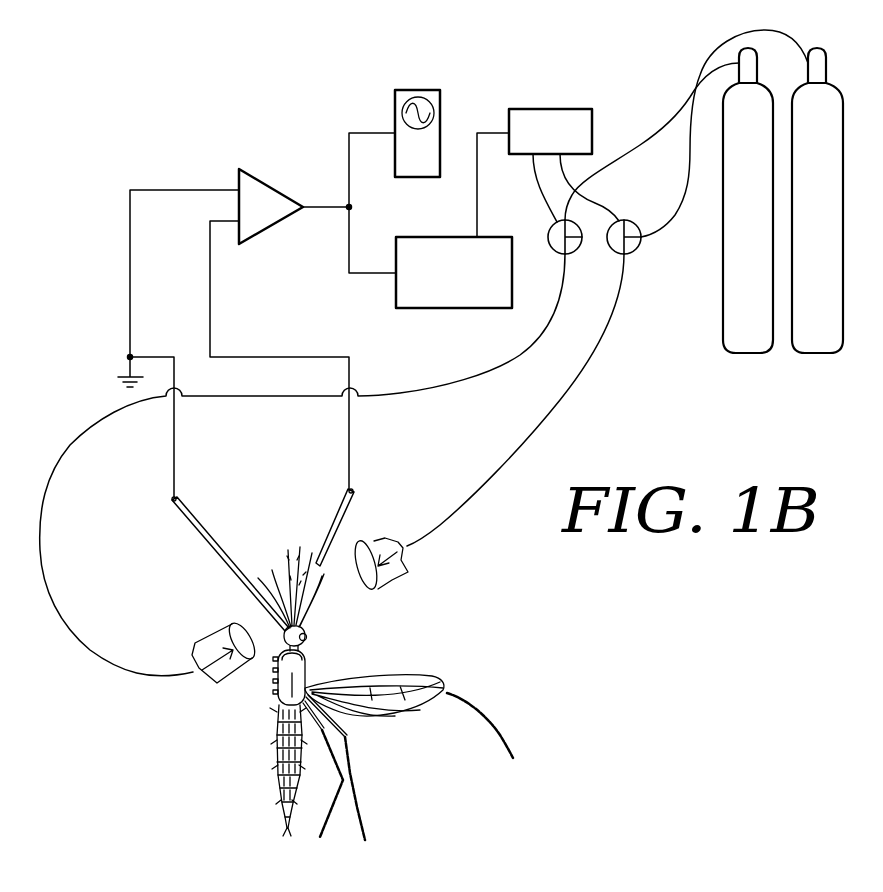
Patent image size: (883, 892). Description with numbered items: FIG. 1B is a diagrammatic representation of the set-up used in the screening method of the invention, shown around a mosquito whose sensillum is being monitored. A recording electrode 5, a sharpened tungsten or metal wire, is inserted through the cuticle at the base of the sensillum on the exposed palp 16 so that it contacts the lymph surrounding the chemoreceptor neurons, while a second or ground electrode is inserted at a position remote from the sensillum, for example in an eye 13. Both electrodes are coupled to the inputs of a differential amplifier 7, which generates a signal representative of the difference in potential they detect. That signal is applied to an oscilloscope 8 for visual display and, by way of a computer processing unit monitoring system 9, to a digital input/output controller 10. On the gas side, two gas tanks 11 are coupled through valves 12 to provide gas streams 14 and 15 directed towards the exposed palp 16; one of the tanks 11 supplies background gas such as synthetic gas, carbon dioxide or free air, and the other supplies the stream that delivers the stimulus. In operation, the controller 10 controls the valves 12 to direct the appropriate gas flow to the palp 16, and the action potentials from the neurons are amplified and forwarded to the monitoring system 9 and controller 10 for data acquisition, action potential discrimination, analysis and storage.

The recording electrode 5 is at (347, 517).
The differential amplifier 7 is at (265, 218).
The oscilloscope 8 is at (424, 171).
The computer processing unit monitoring system 9 is at (463, 286).
The digital input/output controller 10 is at (565, 144).
The gas tanks 11 is at (754, 227).
The valves 12 is at (594, 253).
The eye 13 is at (307, 638).
The gas stream 14 is at (400, 575).
The gas stream 15 is at (207, 633).
The palp 16 is at (310, 603).